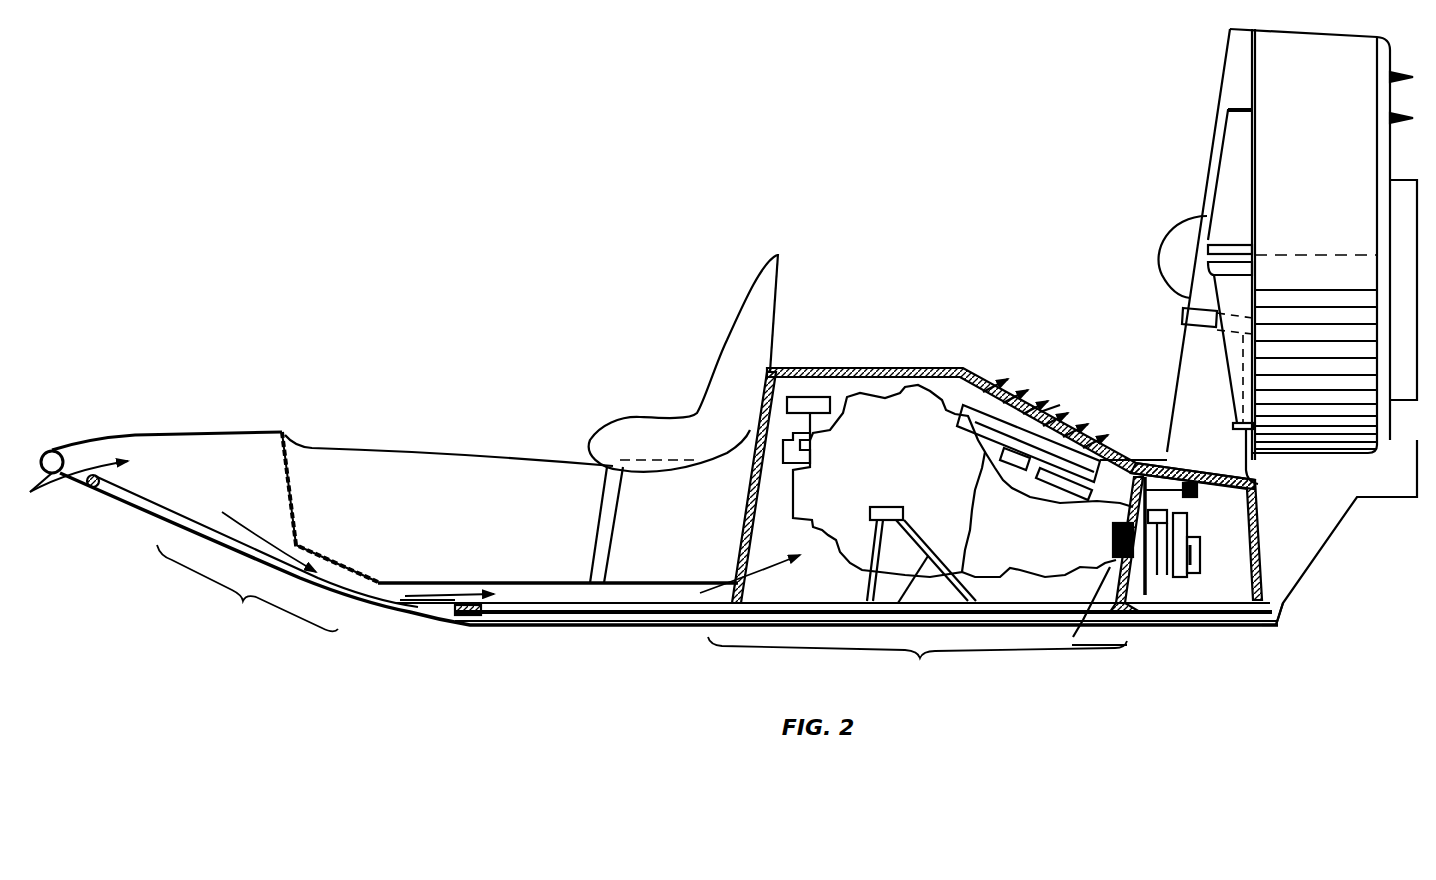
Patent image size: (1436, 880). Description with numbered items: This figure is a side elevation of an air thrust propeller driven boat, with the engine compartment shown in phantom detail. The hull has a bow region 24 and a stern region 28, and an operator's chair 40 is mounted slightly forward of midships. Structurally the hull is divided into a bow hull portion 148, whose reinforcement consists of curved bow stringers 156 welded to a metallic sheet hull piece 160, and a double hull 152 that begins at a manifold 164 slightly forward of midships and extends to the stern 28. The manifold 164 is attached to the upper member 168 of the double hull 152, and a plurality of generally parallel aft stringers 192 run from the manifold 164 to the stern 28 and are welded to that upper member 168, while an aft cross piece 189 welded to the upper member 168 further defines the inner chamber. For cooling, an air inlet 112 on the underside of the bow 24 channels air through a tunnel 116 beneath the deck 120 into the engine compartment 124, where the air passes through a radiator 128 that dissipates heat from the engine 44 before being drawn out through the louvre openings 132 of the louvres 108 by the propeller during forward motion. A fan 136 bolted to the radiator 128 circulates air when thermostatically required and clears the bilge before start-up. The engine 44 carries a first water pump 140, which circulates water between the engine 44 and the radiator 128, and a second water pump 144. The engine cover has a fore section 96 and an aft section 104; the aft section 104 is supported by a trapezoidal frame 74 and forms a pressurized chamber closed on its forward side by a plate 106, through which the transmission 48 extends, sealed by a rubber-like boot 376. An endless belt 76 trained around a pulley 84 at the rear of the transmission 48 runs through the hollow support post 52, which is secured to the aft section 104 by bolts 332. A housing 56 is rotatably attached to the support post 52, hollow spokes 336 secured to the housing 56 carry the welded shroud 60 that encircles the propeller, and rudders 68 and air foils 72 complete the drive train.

The bow region 24 is at (203, 477).
The air inlet 112 is at (84, 486).
The bow hull portion 148 is at (247, 588).
The metallic sheet hull piece 160 is at (357, 622).
The bow stringers 156 is at (403, 620).
The manifold 164 is at (467, 622).
The deck 120 is at (447, 580).
The tunnel 116 is at (540, 600).
The operator's chair 40 is at (660, 420).
The first water pump 140 is at (790, 436).
The second water pump 144 is at (812, 403).
The fore section 96 is at (897, 370).
The louvres 108 is at (1000, 388).
The louvre openings 132 is at (1050, 410).
The bolts 332 is at (1152, 465).
The support post 52 is at (1213, 425).
The engine 44 is at (891, 473).
The fan 136 is at (1012, 468).
The radiator 128 is at (1083, 486).
The transmission 48 is at (1016, 543).
The plate 106 is at (1125, 508).
The engine compartment 124 is at (806, 586).
The aft stringers 192 is at (930, 560).
The double hull portion 152 is at (866, 649).
The boot 376 is at (1073, 645).
The trapezoidal support structure 74 is at (1140, 614).
The endless belt 76 is at (1190, 519).
The pulley 84 is at (1196, 568).
The aft section 104 is at (1262, 486).
The stern region 28 is at (1313, 530).
The upper member 168 is at (1284, 610).
The aft cross piece 189 is at (1268, 626).
The hollow spokes 336 is at (1232, 138).
The shroud 60 is at (1328, 150).
The housing 56 is at (1178, 240).
The air foils 72 is at (1396, 76).
The rudders 68 is at (1400, 188).